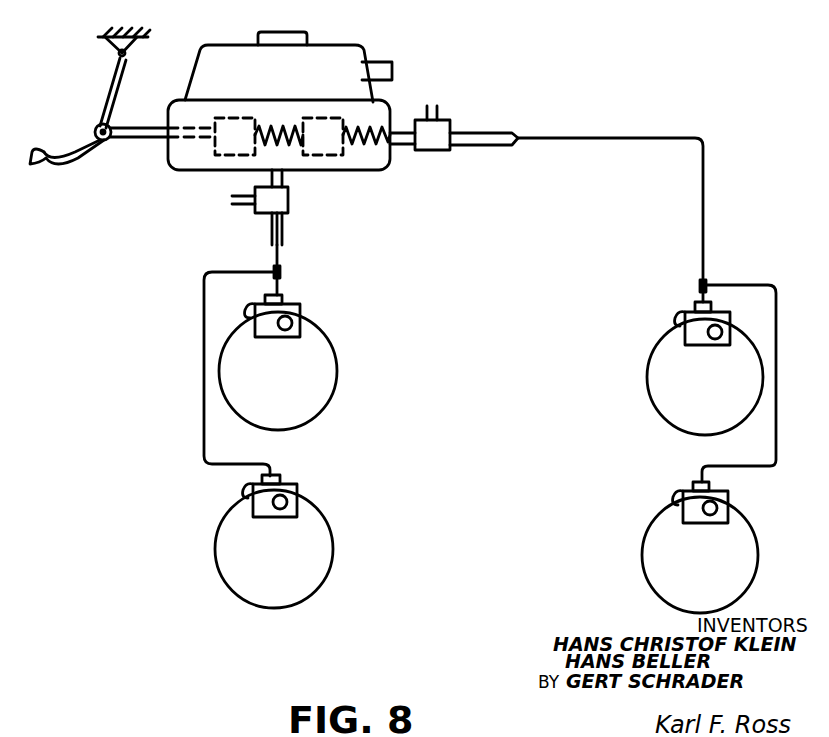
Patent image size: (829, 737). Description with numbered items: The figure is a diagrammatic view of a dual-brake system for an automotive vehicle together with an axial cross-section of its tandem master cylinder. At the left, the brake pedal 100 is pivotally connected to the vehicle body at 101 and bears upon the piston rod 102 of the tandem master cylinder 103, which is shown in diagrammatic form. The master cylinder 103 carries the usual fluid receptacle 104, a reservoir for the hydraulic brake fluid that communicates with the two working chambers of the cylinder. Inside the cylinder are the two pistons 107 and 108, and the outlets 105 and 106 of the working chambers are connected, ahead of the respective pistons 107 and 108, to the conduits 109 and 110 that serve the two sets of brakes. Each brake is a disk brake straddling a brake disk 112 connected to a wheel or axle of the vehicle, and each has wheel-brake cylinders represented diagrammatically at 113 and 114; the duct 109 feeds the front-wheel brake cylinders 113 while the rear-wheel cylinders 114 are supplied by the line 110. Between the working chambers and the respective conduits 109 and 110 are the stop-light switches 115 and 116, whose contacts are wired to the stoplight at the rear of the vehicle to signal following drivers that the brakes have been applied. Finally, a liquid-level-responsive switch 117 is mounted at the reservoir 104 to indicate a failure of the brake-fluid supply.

The brake pedal 100 is at (106, 88).
The pivotal connection to vehicle body 101 is at (118, 53).
The piston rod 102 is at (130, 142).
The tandem master cylinder 103 is at (366, 172).
The fluid receptacle 104 is at (372, 98).
The outlet 105 is at (285, 182).
The outlet 106 is at (398, 150).
The piston 107 is at (240, 117).
The piston 108 is at (312, 118).
The conduit 109 is at (284, 230).
The conduit 110 is at (498, 148).
The brake disk 112 is at (320, 400).
The front-wheel brake cylinder 113 is at (276, 332).
The rear-wheel brake cylinder 114 is at (706, 346).
The stop-light switch 115 is at (258, 216).
The stop-light switch 116 is at (447, 124).
The liquid-level-responsive switch 117 is at (392, 70).